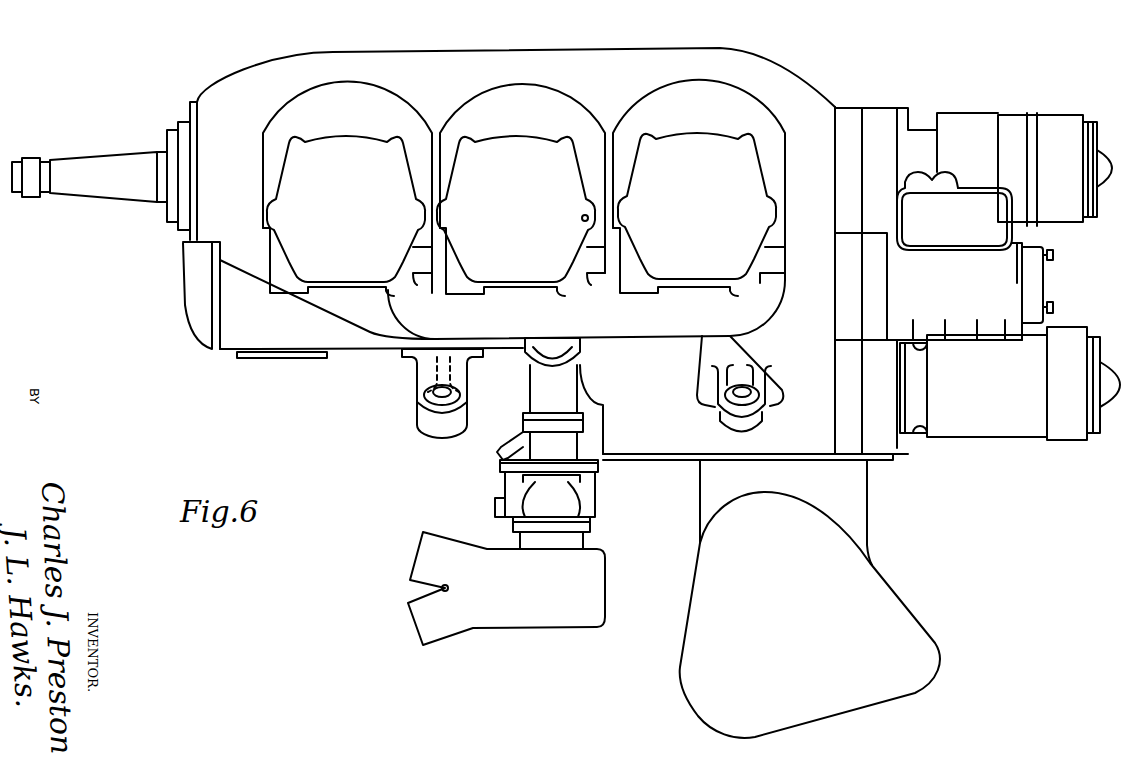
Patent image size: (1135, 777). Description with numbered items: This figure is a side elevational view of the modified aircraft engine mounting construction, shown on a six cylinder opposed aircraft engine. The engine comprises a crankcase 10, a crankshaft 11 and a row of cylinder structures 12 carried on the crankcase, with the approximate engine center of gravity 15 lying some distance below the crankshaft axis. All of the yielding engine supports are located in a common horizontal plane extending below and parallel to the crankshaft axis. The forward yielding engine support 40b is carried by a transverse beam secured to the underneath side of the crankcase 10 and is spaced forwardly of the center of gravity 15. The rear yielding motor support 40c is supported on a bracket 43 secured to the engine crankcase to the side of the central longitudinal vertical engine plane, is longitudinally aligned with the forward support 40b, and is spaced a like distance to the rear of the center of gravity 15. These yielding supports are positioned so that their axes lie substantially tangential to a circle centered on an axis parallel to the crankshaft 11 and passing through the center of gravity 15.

The crankcase 10 is at (786, 75).
The crankshaft 11 is at (86, 158).
The cylinder structures 12 is at (521, 207).
The engine center of gravity 15 is at (580, 224).
The bracket 43 is at (743, 357).
The forward yielding engine support 40b is at (423, 425).
The yielding motor support 40c is at (765, 420).